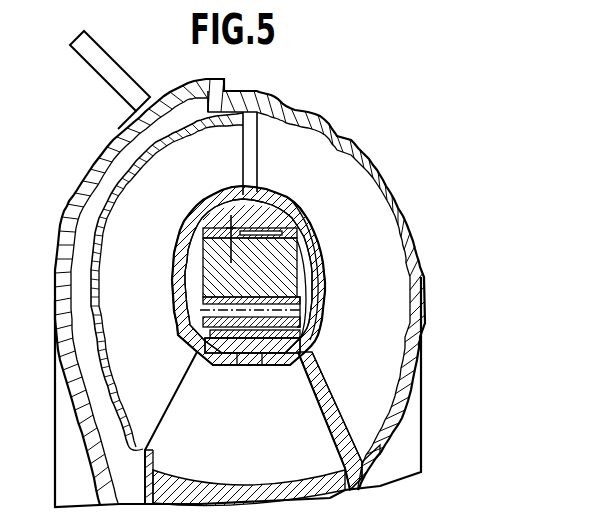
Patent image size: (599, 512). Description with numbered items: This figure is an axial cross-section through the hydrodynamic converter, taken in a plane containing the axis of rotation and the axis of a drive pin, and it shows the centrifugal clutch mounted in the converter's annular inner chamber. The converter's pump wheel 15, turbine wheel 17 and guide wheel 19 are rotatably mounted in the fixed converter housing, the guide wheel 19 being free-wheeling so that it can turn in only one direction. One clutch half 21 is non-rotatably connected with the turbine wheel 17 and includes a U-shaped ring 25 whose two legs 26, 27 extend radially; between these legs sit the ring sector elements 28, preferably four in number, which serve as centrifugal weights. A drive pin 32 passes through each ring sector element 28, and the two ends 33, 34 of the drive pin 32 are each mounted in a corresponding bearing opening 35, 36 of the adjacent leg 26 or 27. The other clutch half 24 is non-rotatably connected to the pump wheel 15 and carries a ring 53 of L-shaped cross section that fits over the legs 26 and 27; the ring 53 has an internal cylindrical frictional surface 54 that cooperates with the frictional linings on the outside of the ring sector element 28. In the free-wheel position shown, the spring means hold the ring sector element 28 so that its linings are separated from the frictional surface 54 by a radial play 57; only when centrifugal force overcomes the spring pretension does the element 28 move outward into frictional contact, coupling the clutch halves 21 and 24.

The pump wheel 15 is at (353, 203).
The turbine wheel 17 is at (123, 366).
The guide wheel 19 is at (251, 449).
The clutch half 21 is at (312, 282).
The clutch half 24 is at (220, 204).
The U-shaped ring 25 is at (309, 290).
The leg 26 is at (301, 257).
The leg 27 is at (180, 269).
The ring sector element 28 is at (291, 206).
The drive pin 32 is at (240, 376).
The end of the drive pin 33 is at (312, 330).
The end of the drive pin 34 is at (233, 318).
The bearing opening 35 is at (305, 305).
The bearing opening 36 is at (195, 318).
The ring 53 is at (262, 194).
The internal cylindrical frictional surface 54 is at (220, 196).
The radial play 57 is at (222, 245).